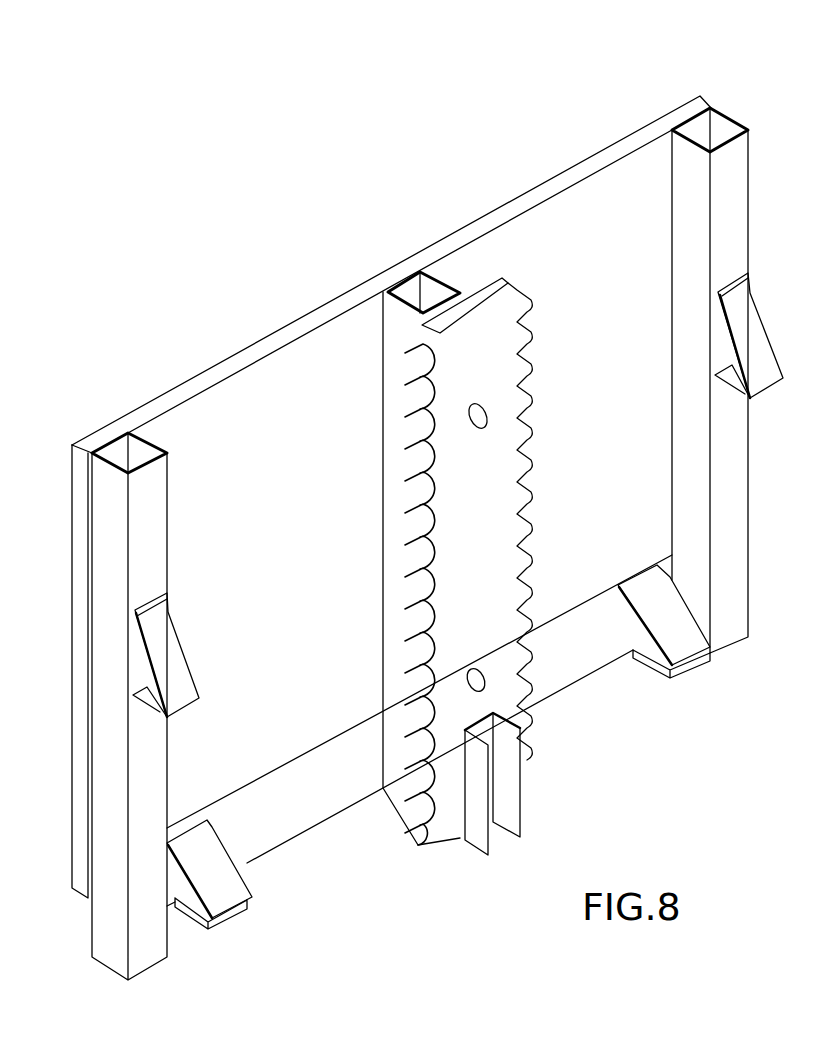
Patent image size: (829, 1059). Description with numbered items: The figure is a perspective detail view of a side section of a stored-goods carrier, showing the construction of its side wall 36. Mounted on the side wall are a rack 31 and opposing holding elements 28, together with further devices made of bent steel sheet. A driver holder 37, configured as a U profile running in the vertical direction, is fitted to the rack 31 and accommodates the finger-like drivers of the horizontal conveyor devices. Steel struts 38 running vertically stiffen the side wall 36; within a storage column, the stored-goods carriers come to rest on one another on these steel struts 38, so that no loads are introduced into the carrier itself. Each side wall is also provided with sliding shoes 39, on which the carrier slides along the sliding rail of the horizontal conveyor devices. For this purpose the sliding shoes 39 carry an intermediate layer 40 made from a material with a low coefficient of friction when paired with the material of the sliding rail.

The holding element 28 is at (165, 664).
The rack 31 is at (447, 829).
The side wall 36 is at (210, 375).
The driver holder 37 is at (510, 813).
The steel strut 38 is at (147, 432).
The sliding shoe 39 is at (223, 920).
The intermediate layer 40 is at (237, 888).